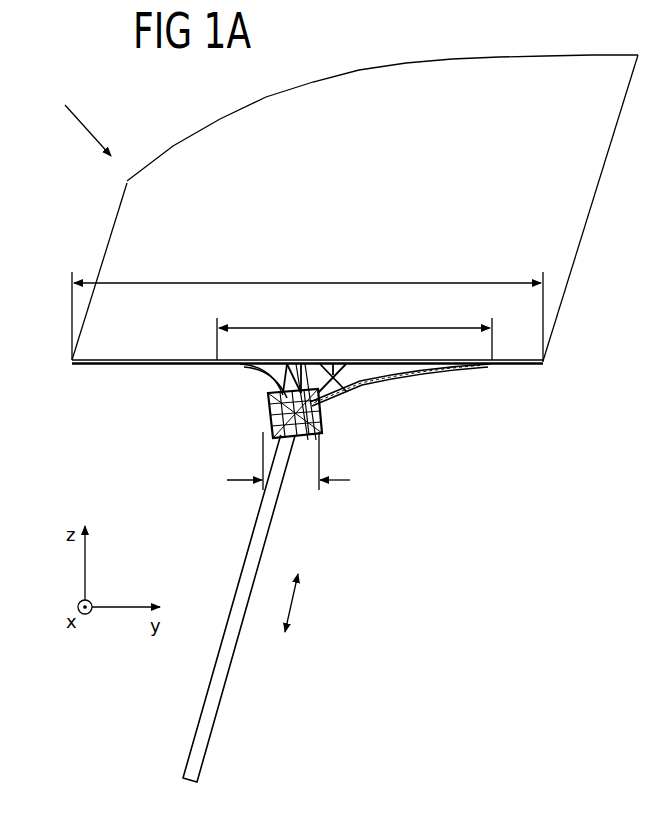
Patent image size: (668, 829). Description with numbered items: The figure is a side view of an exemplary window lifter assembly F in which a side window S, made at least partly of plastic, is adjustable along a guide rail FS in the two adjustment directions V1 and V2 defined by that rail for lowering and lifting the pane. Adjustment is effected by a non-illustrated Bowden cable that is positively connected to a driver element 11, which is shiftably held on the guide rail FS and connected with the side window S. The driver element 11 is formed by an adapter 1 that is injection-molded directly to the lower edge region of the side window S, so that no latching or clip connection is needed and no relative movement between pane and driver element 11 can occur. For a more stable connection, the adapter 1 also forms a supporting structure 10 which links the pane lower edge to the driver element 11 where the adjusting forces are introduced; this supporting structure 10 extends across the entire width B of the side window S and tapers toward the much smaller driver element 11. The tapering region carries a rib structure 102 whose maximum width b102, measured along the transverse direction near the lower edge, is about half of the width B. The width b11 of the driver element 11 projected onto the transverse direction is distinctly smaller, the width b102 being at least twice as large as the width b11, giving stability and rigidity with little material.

The adapter 1 is at (362, 405).
The supporting structure 10 is at (455, 368).
The driver element 11 is at (270, 420).
The rib structure 102 is at (266, 378).
The side window S is at (416, 207).
The guide rail FS is at (213, 705).
The window lifter assembly F is at (79, 119).
The width of the side window B is at (307, 310).
The maximum width of the rib structure b102 is at (354, 333).
The width of the driver element b11 is at (288, 471).
The adjustment direction V1 is at (303, 648).
The adjustment direction V2 is at (308, 599).